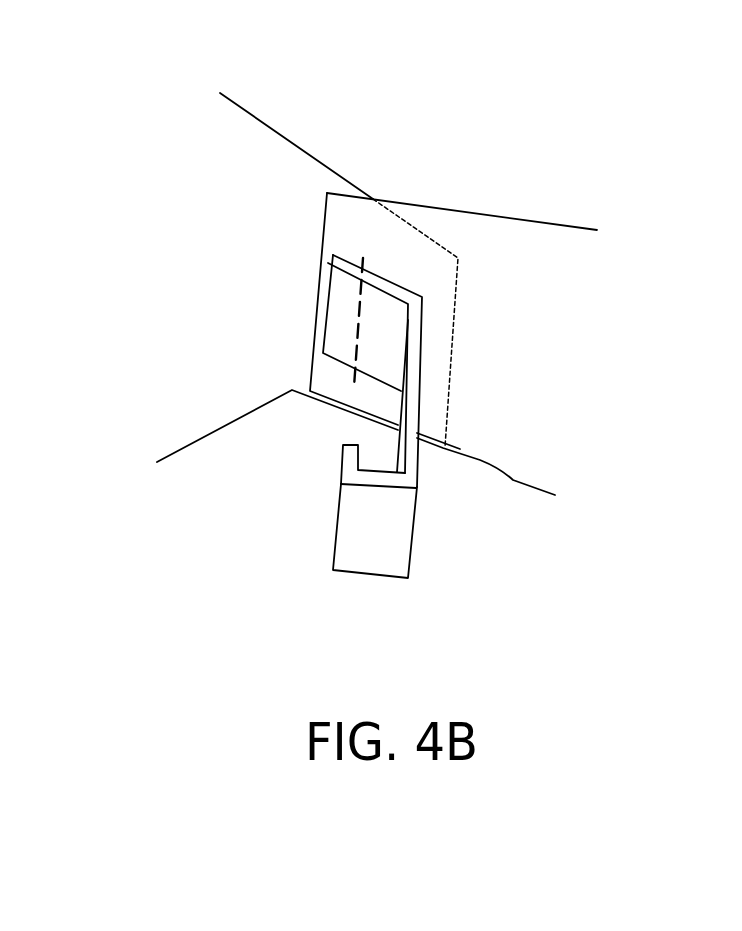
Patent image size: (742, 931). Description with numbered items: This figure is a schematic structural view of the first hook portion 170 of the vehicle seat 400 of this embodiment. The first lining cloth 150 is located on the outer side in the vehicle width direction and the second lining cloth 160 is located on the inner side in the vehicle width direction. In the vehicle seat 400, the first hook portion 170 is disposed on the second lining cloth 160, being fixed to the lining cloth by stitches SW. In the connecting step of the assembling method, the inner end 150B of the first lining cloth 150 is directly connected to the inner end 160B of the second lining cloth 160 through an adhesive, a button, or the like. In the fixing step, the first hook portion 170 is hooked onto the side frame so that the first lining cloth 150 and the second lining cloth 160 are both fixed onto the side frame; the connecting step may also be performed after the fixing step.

The first lining cloth 150 is at (249, 162).
The inner end of the first lining cloth 150B is at (438, 268).
The second lining cloth 160 is at (510, 353).
The inner end of the second lining cloth 160B is at (338, 222).
The stitches SW is at (360, 308).
The first hook portion 170 is at (378, 550).
The vehicle seat 400 is at (613, 623).